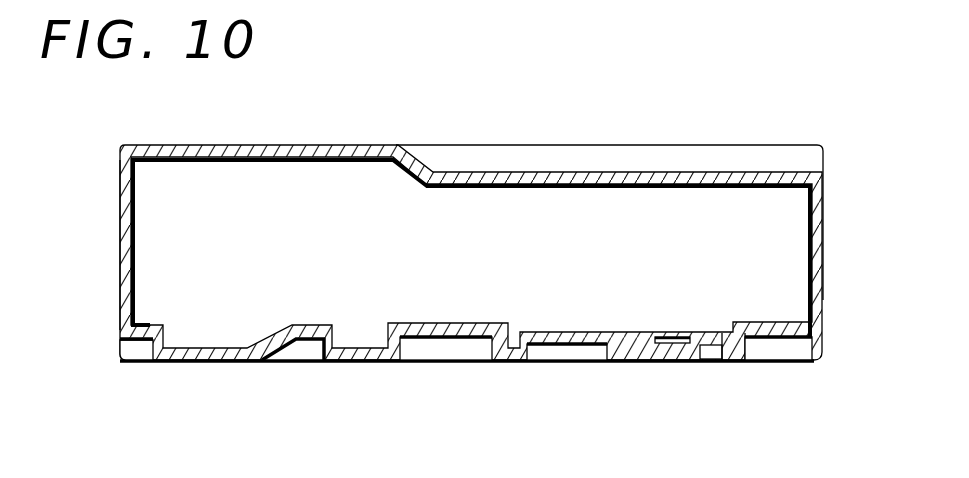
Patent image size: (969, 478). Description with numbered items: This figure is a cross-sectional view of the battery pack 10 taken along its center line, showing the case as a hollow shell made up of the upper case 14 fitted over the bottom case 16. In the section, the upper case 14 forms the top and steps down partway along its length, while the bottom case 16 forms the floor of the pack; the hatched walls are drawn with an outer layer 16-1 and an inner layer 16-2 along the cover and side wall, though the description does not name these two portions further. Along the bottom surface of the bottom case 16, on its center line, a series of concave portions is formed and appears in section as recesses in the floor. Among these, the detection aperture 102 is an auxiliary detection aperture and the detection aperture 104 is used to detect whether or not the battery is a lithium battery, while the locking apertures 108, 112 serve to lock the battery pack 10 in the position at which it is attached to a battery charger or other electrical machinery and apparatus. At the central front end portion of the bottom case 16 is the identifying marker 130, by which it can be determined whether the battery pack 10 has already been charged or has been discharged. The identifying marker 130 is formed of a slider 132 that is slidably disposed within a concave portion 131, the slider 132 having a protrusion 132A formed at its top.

The battery pack 10 is at (336, 126).
The upper case 14 is at (250, 145).
The bottom case 16 is at (471, 298).
The cover 16-1 is at (826, 275).
The side wall 16-2 is at (120, 294).
The detection aperture 102 is at (560, 352).
The detection aperture 104 is at (441, 350).
The locking aperture 108 is at (297, 356).
The locking aperture 112 is at (130, 356).
The identifying marker 130 is at (699, 369).
The concave portion 131 is at (785, 350).
The slider 132 is at (667, 330).
The protrusion 132A is at (734, 350).